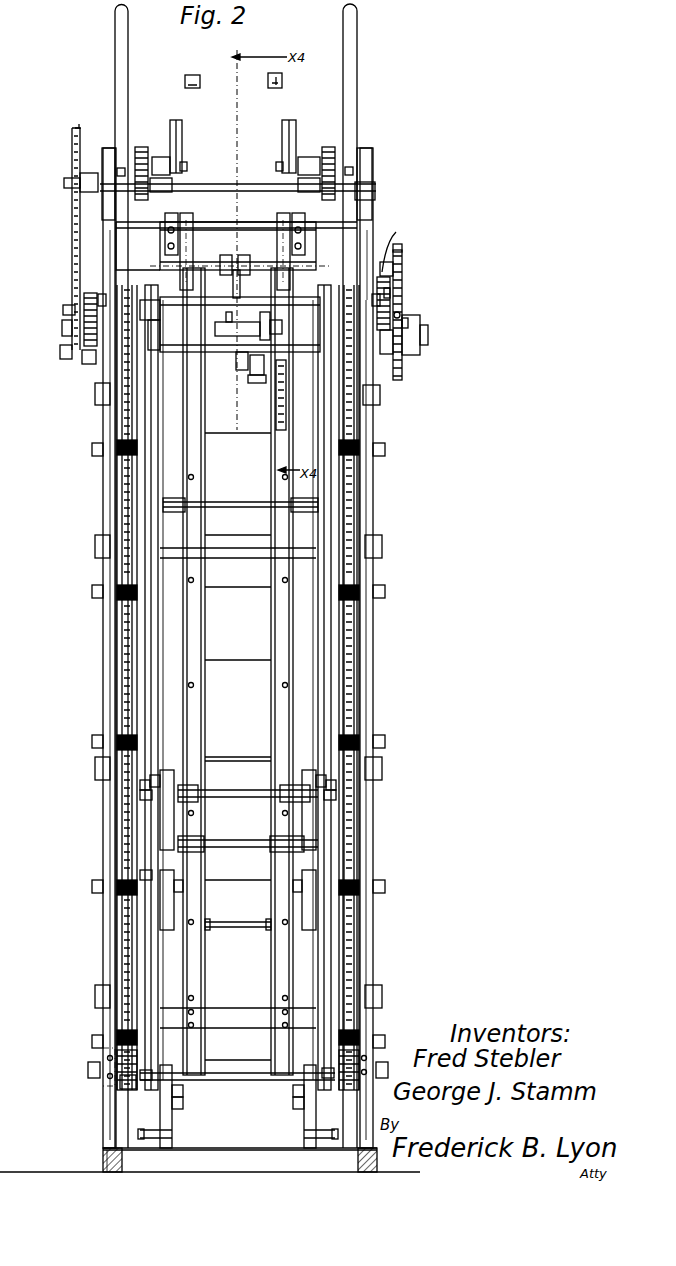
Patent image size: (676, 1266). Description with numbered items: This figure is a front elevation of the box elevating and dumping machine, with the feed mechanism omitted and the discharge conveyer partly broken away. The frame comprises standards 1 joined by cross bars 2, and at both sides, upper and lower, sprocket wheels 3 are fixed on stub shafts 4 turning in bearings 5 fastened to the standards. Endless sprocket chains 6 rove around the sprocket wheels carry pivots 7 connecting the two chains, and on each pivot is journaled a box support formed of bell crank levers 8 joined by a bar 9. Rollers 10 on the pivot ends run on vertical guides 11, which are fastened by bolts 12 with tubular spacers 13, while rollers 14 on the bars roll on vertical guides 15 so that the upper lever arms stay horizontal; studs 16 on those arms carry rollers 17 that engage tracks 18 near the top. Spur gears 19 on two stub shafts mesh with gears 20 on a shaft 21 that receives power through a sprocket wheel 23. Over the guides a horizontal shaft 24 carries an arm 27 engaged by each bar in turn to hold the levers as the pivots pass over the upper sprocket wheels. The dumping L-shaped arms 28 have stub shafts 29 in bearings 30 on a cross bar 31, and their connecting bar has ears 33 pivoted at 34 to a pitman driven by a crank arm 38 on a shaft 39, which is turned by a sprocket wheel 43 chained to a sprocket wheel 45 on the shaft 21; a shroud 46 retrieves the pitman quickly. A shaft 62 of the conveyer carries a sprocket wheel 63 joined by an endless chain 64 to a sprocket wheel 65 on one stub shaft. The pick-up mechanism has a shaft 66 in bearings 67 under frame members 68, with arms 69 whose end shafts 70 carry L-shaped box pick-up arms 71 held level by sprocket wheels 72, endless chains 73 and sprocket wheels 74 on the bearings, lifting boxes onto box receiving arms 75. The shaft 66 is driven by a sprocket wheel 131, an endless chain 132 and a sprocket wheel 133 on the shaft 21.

The standards 1 is at (105, 244).
The cross bars 2 is at (94, 394).
The sprocket wheels 3 is at (117, 370).
The stub shafts 4 is at (404, 303).
The bearings 5 is at (88, 1073).
The endless sprocket chains 6 is at (110, 639).
The pivots 7 is at (211, 848).
The bell crank levers 8 is at (158, 908).
The bar 9 is at (238, 850).
The rollers 10 is at (220, 315).
The vertical guides 11 is at (154, 663).
The bolts 12 is at (92, 455).
The tubular spacers 13 is at (117, 448).
The rollers 14 is at (216, 884).
The vertical guides 15 is at (162, 688).
The studs 16 is at (140, 782).
The rollers 17 is at (150, 785).
The tracks 18 is at (139, 1088).
The spur gears 19 is at (82, 290).
The gears 20 is at (392, 354).
The shaft 21 is at (234, 314).
The sprocket wheel 23 is at (402, 304).
The horizontal shaft 24 is at (150, 352).
The arm 27 is at (242, 370).
The L-shaped arms 28 is at (178, 243).
The stub shafts 29 is at (186, 216).
The bearings 30 is at (170, 214).
The cross bar 31 is at (138, 236).
The ears 33 is at (244, 260).
The pivot 34 is at (224, 260).
The crank arm 38 is at (254, 378).
The shaft 39 is at (233, 284).
The sprocket wheel 43 is at (286, 413).
The sprocket wheel 45 is at (282, 322).
The shroud 46 is at (230, 309).
The shaft 62 is at (396, 232).
The sprocket wheel 63 is at (402, 240).
The endless chain 64 is at (393, 262).
The sprocket wheel 65 is at (408, 320).
The shaft 66 is at (72, 182).
The bearings 67 is at (118, 180).
The frame members 68 is at (115, 44).
The arms 69 is at (160, 157).
The shafts 70 is at (187, 166).
The L-shaped box pick-up arms 71 is at (182, 141).
The sprocket wheels 72 is at (141, 145).
The endless chains 73 is at (136, 151).
The sprocket wheels 74 is at (135, 204).
The box receiving arms 75 is at (191, 74).
The sprocket wheel 131 is at (75, 124).
The endless chain 132 is at (72, 140).
The sprocket wheel 133 is at (70, 358).